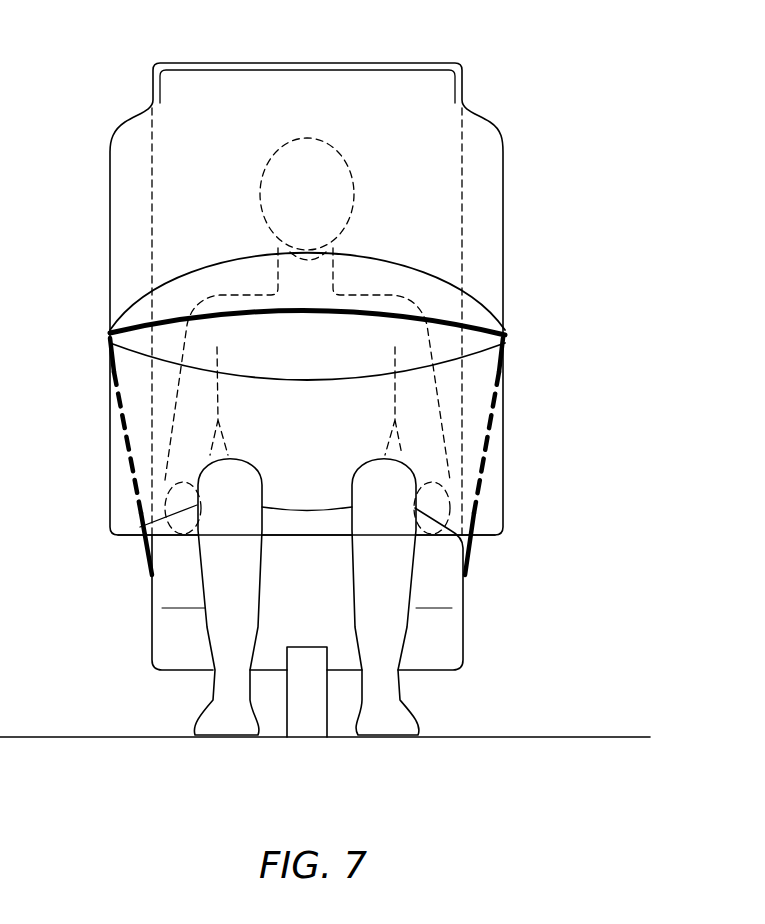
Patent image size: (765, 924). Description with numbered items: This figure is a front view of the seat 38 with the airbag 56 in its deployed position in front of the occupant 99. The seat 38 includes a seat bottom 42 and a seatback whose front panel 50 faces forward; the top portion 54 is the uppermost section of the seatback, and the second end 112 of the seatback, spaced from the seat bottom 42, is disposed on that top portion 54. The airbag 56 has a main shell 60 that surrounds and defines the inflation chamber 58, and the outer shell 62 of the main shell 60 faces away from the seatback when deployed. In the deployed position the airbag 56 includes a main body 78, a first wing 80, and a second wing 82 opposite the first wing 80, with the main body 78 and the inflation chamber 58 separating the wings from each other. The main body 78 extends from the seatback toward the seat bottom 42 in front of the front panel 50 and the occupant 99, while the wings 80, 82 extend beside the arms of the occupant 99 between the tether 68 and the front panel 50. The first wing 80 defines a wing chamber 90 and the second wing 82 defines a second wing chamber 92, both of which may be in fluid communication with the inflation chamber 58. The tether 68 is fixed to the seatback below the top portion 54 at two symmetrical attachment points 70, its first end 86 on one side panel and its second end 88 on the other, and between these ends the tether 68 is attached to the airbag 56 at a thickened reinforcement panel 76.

The second end 112 is at (403, 63).
The top portion 54 is at (463, 84).
The main shell 60 is at (110, 172).
The outer shell 62 is at (163, 228).
The second wing 82 is at (110, 256).
The second wing chamber 92 is at (130, 285).
The tether 68 is at (245, 312).
The reinforcement panel 76 is at (403, 268).
The airbag 56 is at (480, 172).
The inflation chamber 58 is at (483, 216).
The first wing 80 is at (503, 253).
The wing chamber 90 is at (483, 285).
The front panel 50 is at (147, 540).
The attachment point 70 is at (148, 580).
The second end 88 is at (148, 590).
The occupant 99 is at (207, 625).
The main body 78 is at (322, 510).
The first end 86 is at (467, 575).
The seat 38 is at (466, 605).
The seat bottom 42 is at (465, 640).